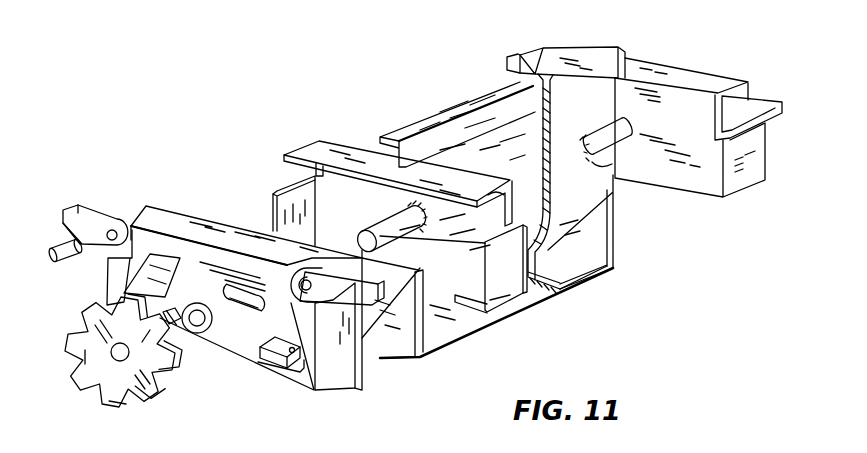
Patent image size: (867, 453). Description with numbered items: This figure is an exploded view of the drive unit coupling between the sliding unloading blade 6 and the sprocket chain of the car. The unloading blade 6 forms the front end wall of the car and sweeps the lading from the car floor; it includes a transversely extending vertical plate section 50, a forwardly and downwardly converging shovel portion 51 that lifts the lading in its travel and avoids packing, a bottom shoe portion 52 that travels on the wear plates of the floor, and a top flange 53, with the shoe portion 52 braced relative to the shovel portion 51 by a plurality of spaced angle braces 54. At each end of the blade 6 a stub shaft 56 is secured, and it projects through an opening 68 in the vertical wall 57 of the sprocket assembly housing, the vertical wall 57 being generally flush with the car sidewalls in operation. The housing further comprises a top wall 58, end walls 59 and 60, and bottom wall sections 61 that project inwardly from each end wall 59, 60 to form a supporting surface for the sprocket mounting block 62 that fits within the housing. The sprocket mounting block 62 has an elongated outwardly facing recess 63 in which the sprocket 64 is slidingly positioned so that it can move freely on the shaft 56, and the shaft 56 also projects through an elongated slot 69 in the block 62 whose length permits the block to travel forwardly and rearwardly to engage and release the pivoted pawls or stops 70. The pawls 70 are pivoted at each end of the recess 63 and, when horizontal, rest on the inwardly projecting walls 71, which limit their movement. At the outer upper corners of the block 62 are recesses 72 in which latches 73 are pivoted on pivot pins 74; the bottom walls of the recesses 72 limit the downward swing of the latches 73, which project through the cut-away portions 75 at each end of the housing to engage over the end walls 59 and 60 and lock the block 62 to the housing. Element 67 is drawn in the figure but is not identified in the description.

The unloading blade 6 is at (484, 86).
The vertical plate section 50 is at (495, 150).
The shovel portion 51 is at (447, 298).
The bottom shoe portion 52 is at (493, 317).
The top flange 53 is at (436, 122).
The angle braces 54 is at (397, 337).
The stub shafts 56 is at (398, 240).
The vertical wall 57 is at (475, 235).
The top wall 58 is at (347, 155).
The end wall 59 is at (272, 212).
The end wall 60 is at (517, 275).
The bottom wall sections 61 is at (477, 300).
The sprocket mounting block 62 is at (195, 225).
The recess 63 is at (180, 260).
The sprocket 64 is at (127, 382).
The bracket 67 is at (605, 165).
The opening 68 is at (423, 214).
The elongated slot 69 is at (254, 307).
The pivoted pawls or stops 70 is at (172, 314).
The inwardly projecting walls 71 is at (298, 368).
The recesses 72 is at (107, 277).
The latches 73 is at (88, 225).
The pivot pins 74 is at (60, 245).
The cut-away portions 75 is at (500, 197).